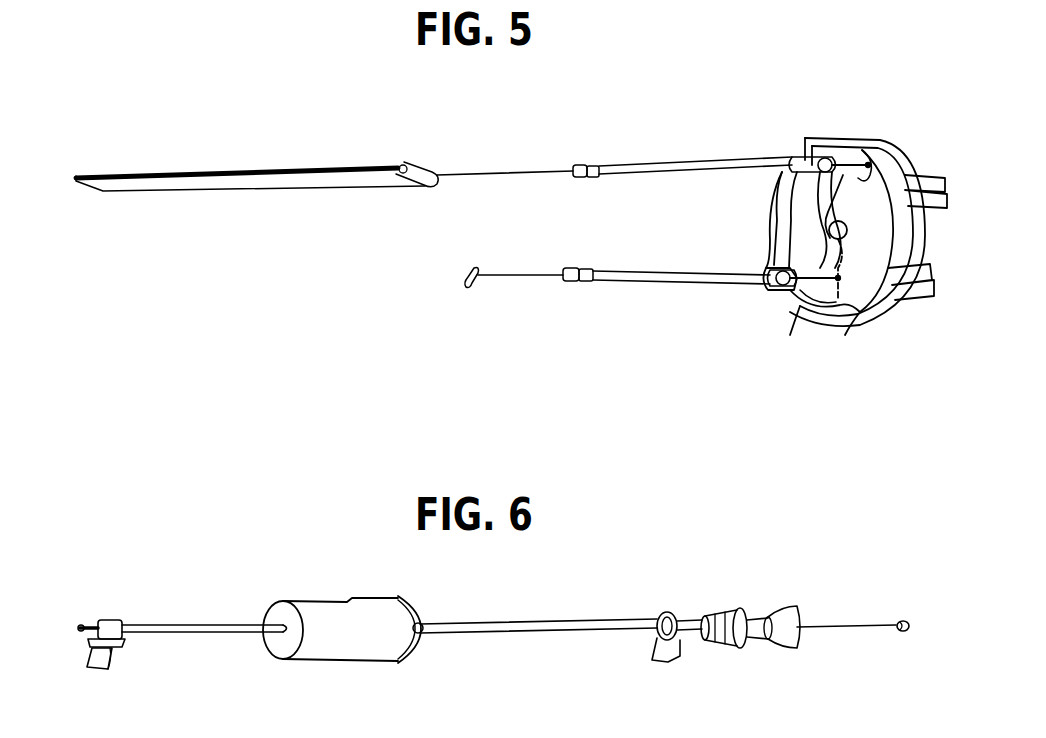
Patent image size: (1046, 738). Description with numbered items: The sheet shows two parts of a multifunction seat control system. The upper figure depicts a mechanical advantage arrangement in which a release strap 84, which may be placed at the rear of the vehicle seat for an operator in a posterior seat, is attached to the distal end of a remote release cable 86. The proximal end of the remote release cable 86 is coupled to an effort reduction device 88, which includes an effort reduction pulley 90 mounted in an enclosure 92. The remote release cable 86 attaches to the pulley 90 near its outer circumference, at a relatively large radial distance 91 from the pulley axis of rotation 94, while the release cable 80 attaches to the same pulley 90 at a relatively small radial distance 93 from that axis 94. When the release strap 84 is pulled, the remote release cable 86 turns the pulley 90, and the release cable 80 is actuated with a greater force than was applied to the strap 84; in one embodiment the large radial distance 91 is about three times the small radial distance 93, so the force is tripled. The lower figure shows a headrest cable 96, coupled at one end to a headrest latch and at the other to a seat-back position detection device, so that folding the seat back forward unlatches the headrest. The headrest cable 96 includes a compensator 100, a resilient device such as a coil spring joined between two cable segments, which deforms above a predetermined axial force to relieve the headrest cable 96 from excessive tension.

In FIG. 5, the release cable 80 is at (514, 280).
In FIG. 5, the release strap 84 is at (236, 166).
In FIG. 5, the remote release cable 86 is at (490, 168).
In FIG. 5, the effort reduction device 88 is at (802, 235).
In FIG. 5, the effort reduction pulley 90 is at (810, 302).
In FIG. 5, the large radial distance 91 is at (866, 160).
In FIG. 5, the enclosure 92 is at (790, 226).
In FIG. 5, the small radial distance 93 is at (846, 295).
In FIG. 5, the pulley axis of rotation 94 is at (824, 226).
In FIG. 6, the headrest cable 96 is at (578, 664).
In FIG. 6, the compensator 100 is at (318, 610).